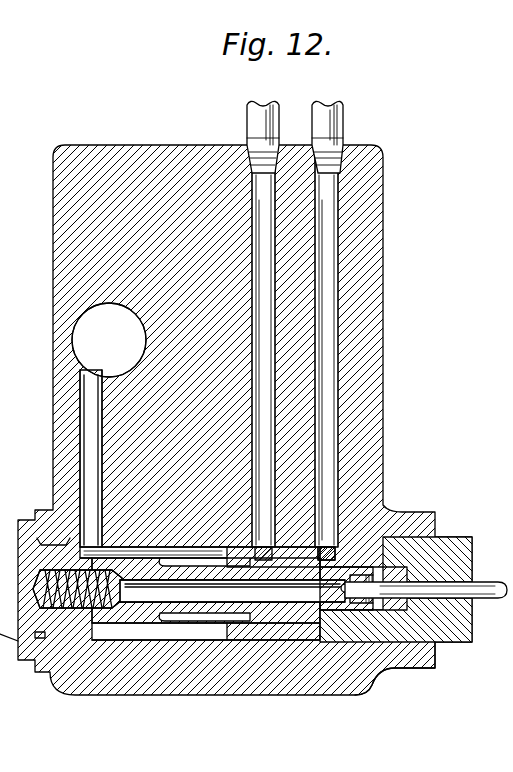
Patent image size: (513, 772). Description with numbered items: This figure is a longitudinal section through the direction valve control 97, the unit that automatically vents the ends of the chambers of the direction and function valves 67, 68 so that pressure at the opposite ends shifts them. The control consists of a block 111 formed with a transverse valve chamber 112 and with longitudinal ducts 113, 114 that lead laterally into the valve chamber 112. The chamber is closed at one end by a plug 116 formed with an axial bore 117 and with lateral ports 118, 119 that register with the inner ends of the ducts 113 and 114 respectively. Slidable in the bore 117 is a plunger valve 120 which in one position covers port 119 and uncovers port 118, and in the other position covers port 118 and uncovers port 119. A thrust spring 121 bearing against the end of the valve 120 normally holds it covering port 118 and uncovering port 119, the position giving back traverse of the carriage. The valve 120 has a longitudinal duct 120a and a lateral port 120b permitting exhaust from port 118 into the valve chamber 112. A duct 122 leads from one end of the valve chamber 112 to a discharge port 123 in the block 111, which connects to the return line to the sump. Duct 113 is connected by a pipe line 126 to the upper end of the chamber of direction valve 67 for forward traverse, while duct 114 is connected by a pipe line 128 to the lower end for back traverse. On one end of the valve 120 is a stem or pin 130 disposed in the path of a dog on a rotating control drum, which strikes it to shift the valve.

The block 111 is at (145, 147).
The direction valve control 97 is at (214, 127).
The pipe line 128 is at (266, 104).
The pipe line 126 is at (340, 120).
The longitudinal duct 113 is at (335, 290).
The longitudinal duct 114 is at (270, 358).
The discharge port 123 is at (88, 343).
The duct 122 is at (78, 423).
The lateral port 119 is at (248, 543).
The lateral port 118 is at (328, 545).
The lateral port 120b is at (350, 565).
The plug 116 is at (415, 540).
The stem or pin 130 is at (487, 582).
The axial bore 117 is at (393, 612).
The thrust spring 121 is at (83, 606).
The transverse valve chamber 112 is at (206, 628).
The longitudinal duct 120a is at (276, 602).
The plunger valve 120 is at (300, 602).
The direction valve 67 is at (8, 222).
The function valve 68 is at (8, 247).